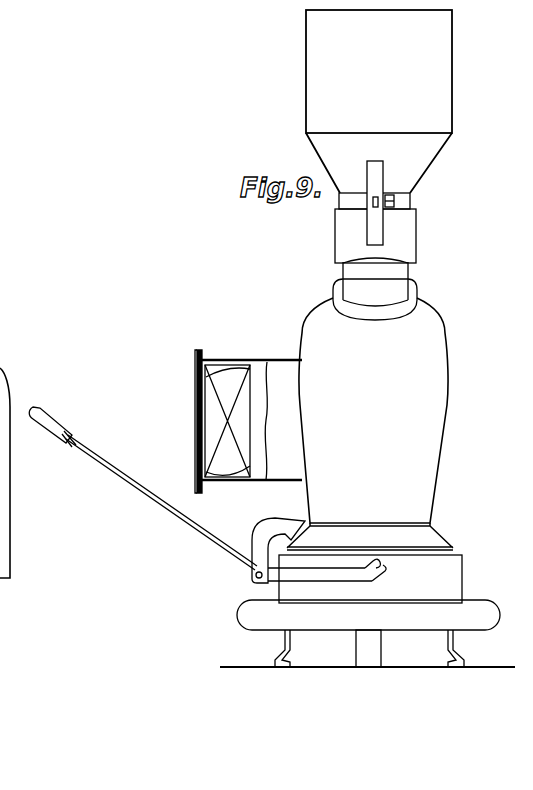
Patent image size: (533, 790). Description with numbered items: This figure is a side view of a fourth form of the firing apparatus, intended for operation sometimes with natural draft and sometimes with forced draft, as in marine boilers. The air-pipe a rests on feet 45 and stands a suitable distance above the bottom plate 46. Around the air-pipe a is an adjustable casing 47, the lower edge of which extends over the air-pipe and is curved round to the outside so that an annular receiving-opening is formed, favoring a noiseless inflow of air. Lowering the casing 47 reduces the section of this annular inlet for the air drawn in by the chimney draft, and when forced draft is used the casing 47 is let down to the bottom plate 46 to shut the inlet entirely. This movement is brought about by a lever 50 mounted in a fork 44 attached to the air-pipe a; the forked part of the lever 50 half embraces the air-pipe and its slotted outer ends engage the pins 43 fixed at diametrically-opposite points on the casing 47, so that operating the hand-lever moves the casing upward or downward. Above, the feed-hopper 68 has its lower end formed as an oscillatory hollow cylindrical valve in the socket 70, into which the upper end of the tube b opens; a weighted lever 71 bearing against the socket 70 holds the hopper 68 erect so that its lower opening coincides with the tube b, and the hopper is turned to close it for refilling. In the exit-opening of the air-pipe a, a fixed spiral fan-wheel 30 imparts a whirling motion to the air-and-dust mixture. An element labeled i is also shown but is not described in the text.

The feed-hopper 68 is at (442, 108).
The weighted lever 71 is at (383, 170).
The socket 70 is at (412, 246).
The tube b is at (408, 282).
The air-pipe a is at (290, 362).
The fixed spiral fan-wheel 30 is at (212, 406).
The lever 50 is at (326, 580).
The fork 44 is at (270, 520).
The pins 43 is at (388, 577).
The adjustable casing 47 is at (465, 581).
The feet 45 is at (464, 647).
The bottom plate 46 is at (335, 669).
The adjacent element i is at (0, 387).